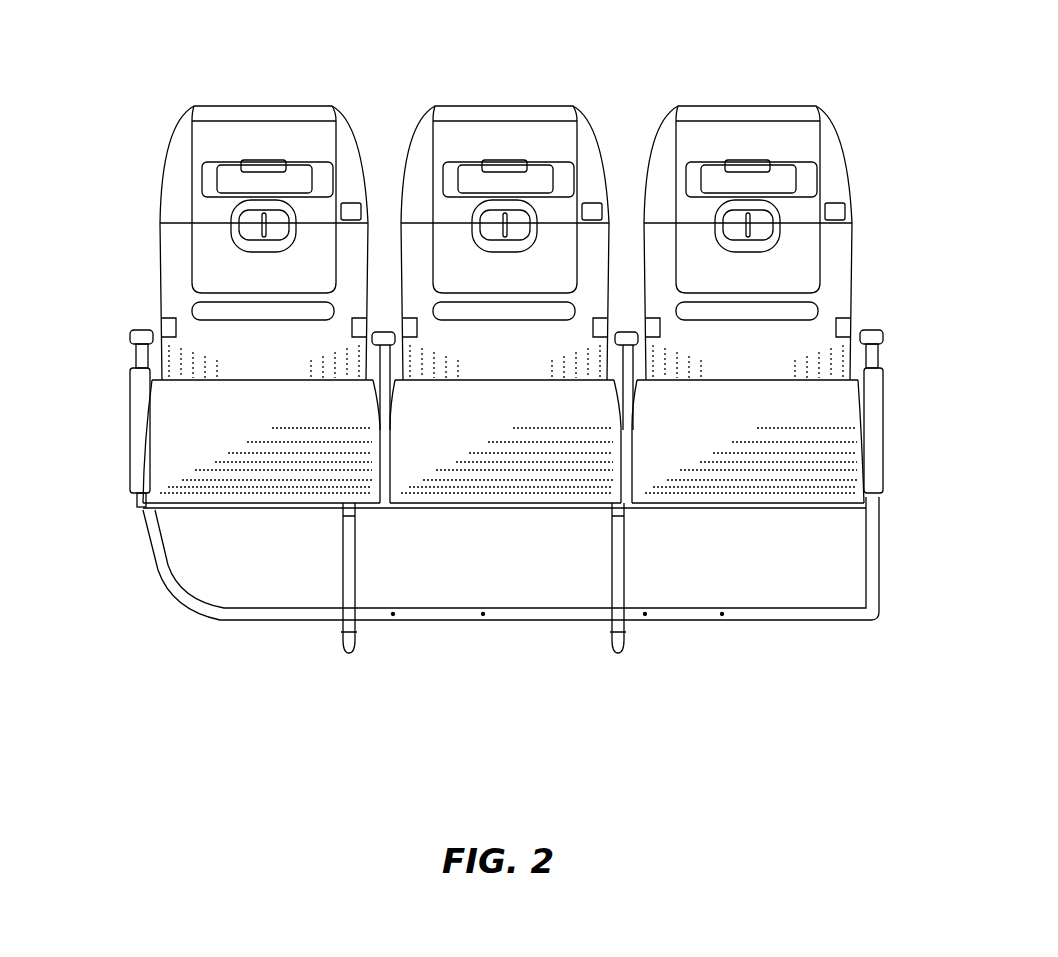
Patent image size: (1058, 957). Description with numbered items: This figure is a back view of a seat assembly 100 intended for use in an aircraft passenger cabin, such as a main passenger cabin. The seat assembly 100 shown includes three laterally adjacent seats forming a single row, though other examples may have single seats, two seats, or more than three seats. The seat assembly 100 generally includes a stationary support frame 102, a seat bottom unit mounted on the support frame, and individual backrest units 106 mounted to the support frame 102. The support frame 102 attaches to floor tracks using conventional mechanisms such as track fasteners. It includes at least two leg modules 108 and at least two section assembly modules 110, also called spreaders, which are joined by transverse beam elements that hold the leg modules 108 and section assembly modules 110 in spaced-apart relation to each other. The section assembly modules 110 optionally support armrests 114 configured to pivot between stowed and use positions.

The seat assembly 100 is at (143, 145).
The support frame 102 is at (640, 637).
The backrest unit 106 is at (305, 98).
The leg module 108 is at (346, 605).
The section assembly module 110 is at (868, 388).
The armrest 114 is at (135, 332).